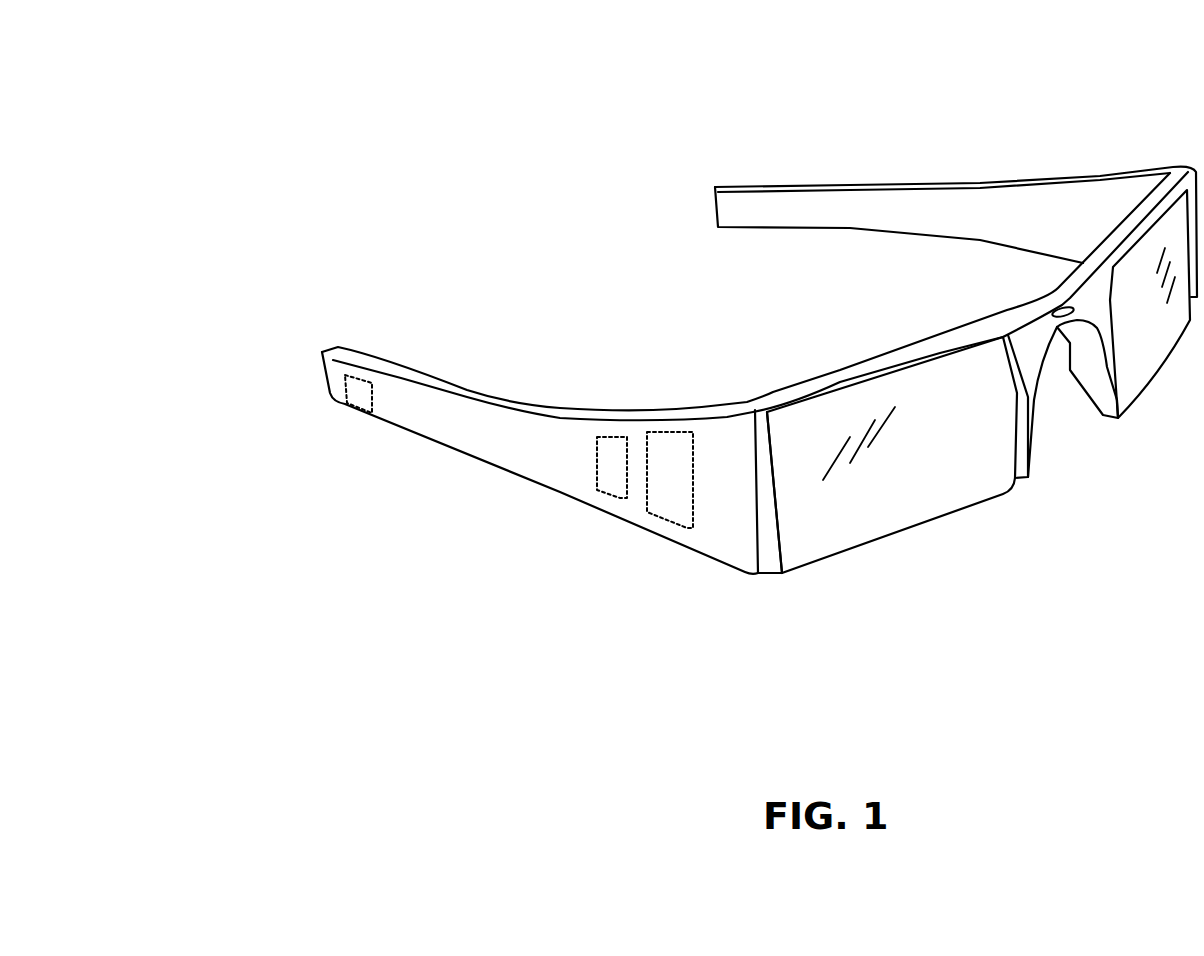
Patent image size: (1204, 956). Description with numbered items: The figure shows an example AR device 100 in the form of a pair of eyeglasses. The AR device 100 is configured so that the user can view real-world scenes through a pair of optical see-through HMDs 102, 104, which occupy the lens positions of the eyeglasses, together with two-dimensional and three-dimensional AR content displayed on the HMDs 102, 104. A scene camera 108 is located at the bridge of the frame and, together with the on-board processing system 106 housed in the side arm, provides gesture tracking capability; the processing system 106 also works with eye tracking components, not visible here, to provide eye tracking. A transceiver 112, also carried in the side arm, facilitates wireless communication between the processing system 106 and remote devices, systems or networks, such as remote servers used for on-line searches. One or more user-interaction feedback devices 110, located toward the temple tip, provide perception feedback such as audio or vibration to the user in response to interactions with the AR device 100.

The AR device 100 is at (258, 66).
The optical see-through HMD 102 is at (903, 522).
The optical see-through HMD 104 is at (1150, 362).
The scene camera 108 is at (1052, 307).
The user-interaction feedback device 110 is at (363, 408).
The transceiver 112 is at (612, 495).
The on-board processing system 106 is at (675, 523).